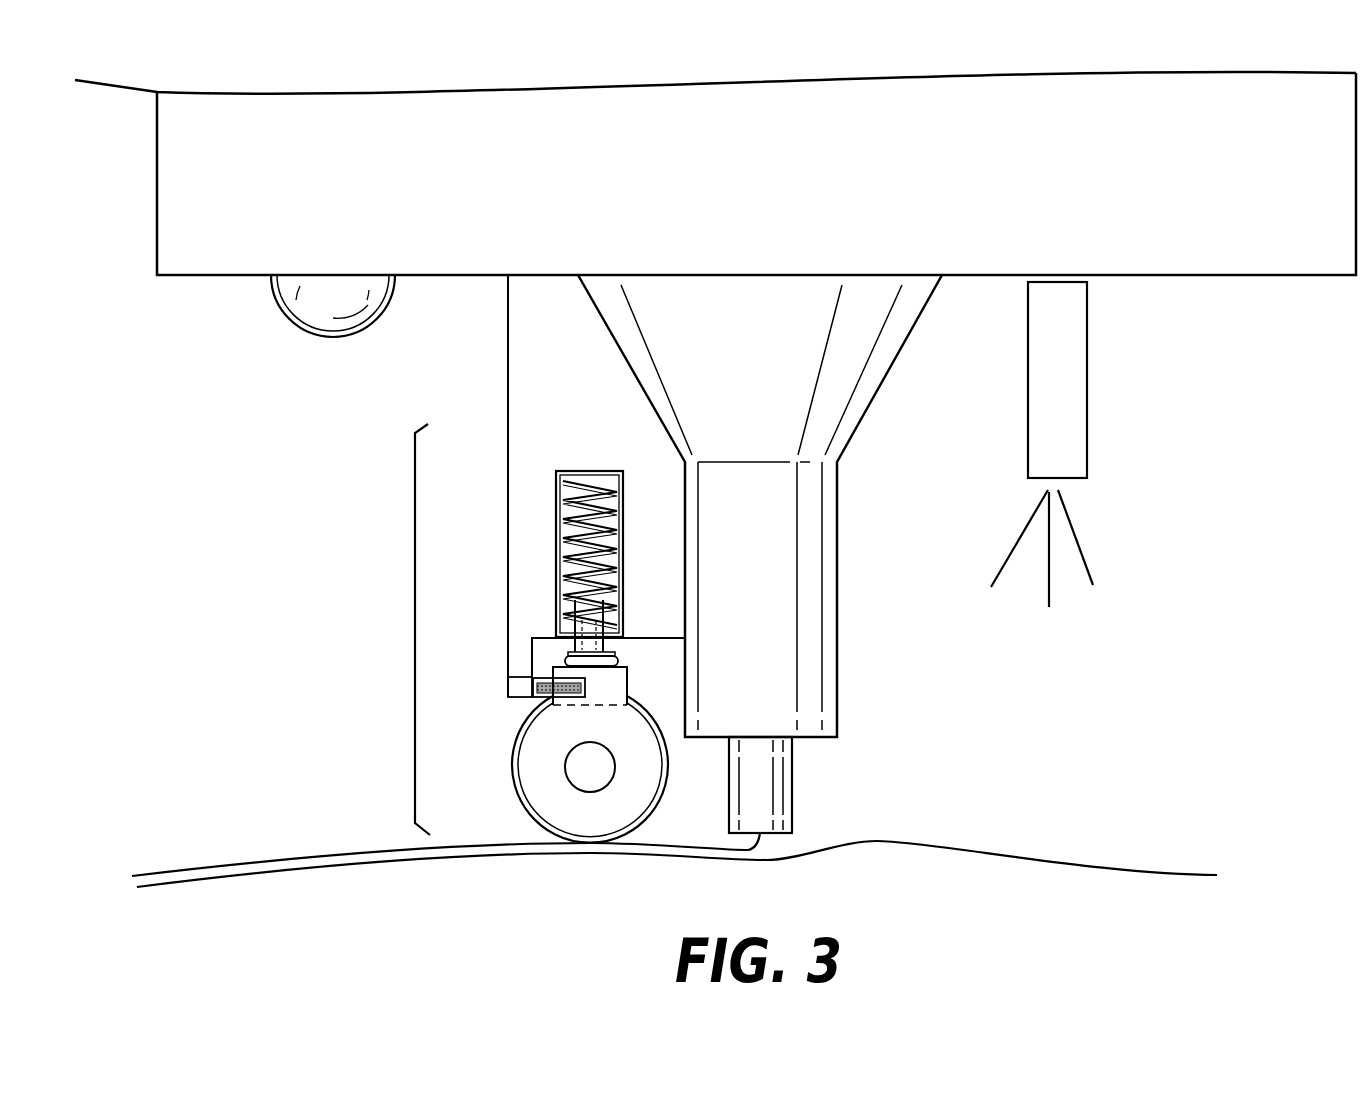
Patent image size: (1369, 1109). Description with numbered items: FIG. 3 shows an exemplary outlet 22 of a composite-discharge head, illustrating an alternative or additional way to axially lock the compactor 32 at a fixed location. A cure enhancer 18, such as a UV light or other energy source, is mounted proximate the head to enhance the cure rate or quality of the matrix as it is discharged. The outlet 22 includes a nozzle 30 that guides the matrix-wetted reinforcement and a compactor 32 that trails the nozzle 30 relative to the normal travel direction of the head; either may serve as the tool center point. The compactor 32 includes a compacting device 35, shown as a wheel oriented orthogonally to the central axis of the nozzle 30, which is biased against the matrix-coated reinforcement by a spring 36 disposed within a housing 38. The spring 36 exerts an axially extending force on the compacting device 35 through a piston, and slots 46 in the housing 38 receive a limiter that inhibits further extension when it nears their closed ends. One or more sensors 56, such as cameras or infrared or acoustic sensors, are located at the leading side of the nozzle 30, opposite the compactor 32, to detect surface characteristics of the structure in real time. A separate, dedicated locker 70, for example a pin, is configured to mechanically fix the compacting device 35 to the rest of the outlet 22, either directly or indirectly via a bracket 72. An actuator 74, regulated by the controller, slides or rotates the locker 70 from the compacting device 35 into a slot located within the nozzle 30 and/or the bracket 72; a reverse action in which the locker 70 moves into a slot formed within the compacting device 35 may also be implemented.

The cure enhancer 18 is at (335, 340).
The outlet 22 is at (172, 537).
The nozzle 30 is at (822, 653).
The compactor 32 is at (415, 631).
The compacting device 35 is at (530, 822).
The spring 36 is at (608, 556).
The housing 38 is at (585, 471).
The slots 46 is at (556, 490).
The sensors 56 is at (1043, 394).
The locker 70 is at (536, 695).
The bracket 72 is at (544, 615).
The actuator 74 is at (521, 688).